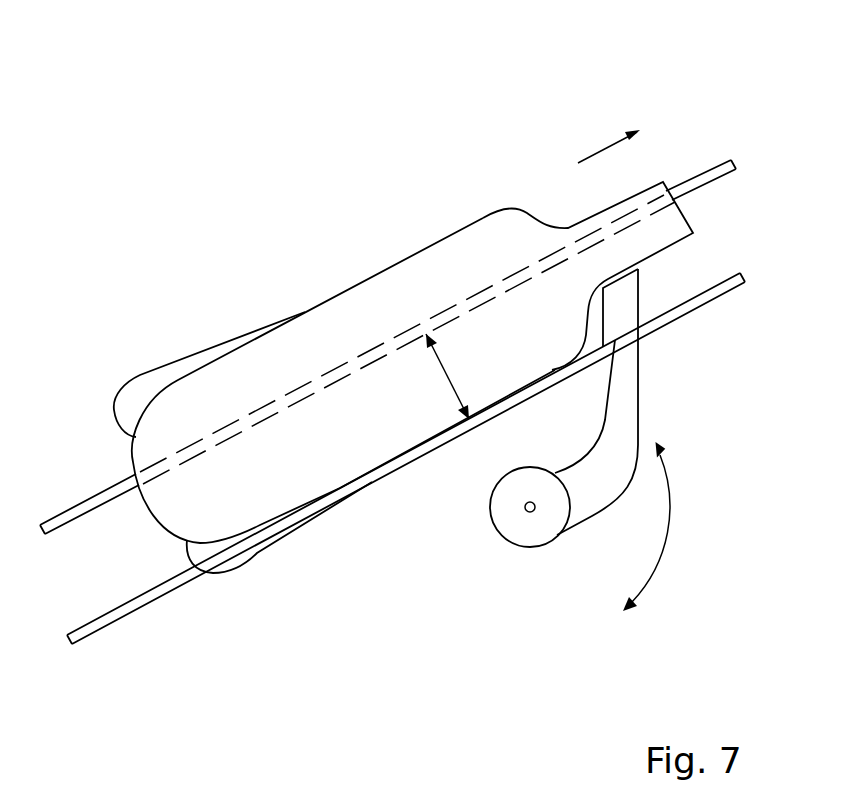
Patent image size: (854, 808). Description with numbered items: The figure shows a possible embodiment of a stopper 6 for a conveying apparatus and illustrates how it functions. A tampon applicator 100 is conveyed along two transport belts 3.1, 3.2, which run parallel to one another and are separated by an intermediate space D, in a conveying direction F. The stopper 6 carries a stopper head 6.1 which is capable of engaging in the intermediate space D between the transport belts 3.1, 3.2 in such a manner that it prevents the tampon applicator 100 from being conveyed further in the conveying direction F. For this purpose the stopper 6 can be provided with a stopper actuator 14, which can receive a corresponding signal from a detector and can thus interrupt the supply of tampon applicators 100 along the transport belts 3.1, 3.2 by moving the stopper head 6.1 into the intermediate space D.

The tampon applicator 100 is at (428, 283).
The transport belt 3.1 is at (161, 589).
The transport belt 3.2 is at (79, 508).
The stopper 6 is at (618, 433).
The stopper head 6.1 is at (623, 300).
The stopper actuator 14 is at (513, 517).
The conveying direction F is at (600, 147).
The intermediate space D is at (448, 376).